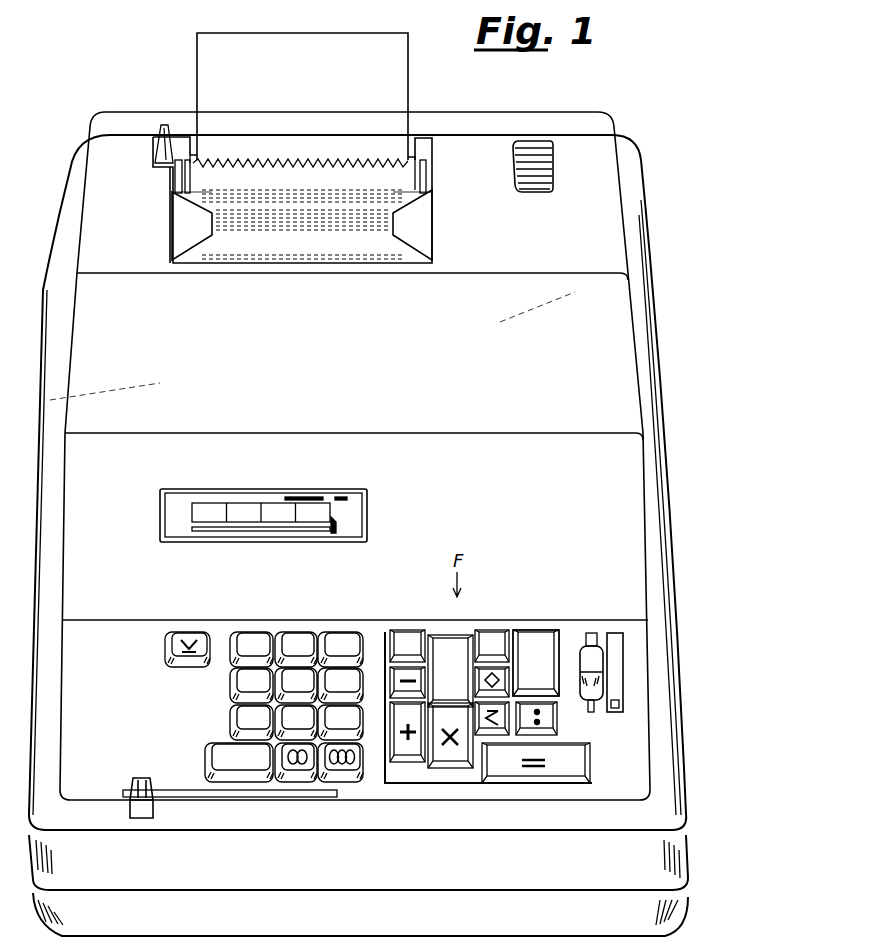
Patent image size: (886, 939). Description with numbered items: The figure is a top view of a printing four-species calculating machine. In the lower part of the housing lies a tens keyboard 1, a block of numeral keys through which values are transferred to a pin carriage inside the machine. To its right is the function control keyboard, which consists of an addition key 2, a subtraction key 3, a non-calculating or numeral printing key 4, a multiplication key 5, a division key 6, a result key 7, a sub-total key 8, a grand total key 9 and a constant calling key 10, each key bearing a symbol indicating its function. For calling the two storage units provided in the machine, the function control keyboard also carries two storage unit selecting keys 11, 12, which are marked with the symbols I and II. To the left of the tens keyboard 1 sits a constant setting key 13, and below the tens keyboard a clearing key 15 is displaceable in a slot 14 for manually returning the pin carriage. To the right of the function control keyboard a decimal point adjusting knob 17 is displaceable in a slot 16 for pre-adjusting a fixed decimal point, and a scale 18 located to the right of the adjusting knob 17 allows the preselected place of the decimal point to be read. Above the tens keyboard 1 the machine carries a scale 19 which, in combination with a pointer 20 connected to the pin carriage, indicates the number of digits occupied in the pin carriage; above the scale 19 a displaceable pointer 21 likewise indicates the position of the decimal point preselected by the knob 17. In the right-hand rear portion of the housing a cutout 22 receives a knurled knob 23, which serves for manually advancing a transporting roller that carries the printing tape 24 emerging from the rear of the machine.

The tens keyboard 1 is at (247, 711).
The addition key 2 is at (411, 762).
The subtraction key 3 is at (392, 686).
The non-calculating or numeral printing key 4 is at (403, 630).
The multiplication key 5 is at (458, 763).
The division key 6 is at (553, 718).
The result key 7 is at (580, 760).
The sub-total key 8 is at (508, 678).
The grand total key 9 is at (483, 630).
The constant calling key 10 is at (502, 736).
The storage unit selecting key 11 is at (445, 635).
The storage unit selecting key 12 is at (548, 630).
The constant setting key 13 is at (175, 644).
The slot 14 is at (177, 791).
The clearing key 15 is at (143, 785).
The slot 16 is at (591, 709).
The decimal point adjusting knob 17 is at (588, 648).
The scale 18 is at (614, 633).
The scale 19 is at (258, 522).
The pointer 20 is at (333, 533).
The displaceable pointer 21 is at (307, 503).
The cutout 22 is at (553, 148).
The knurled knob 23 is at (547, 171).
The tape 24 is at (400, 82).